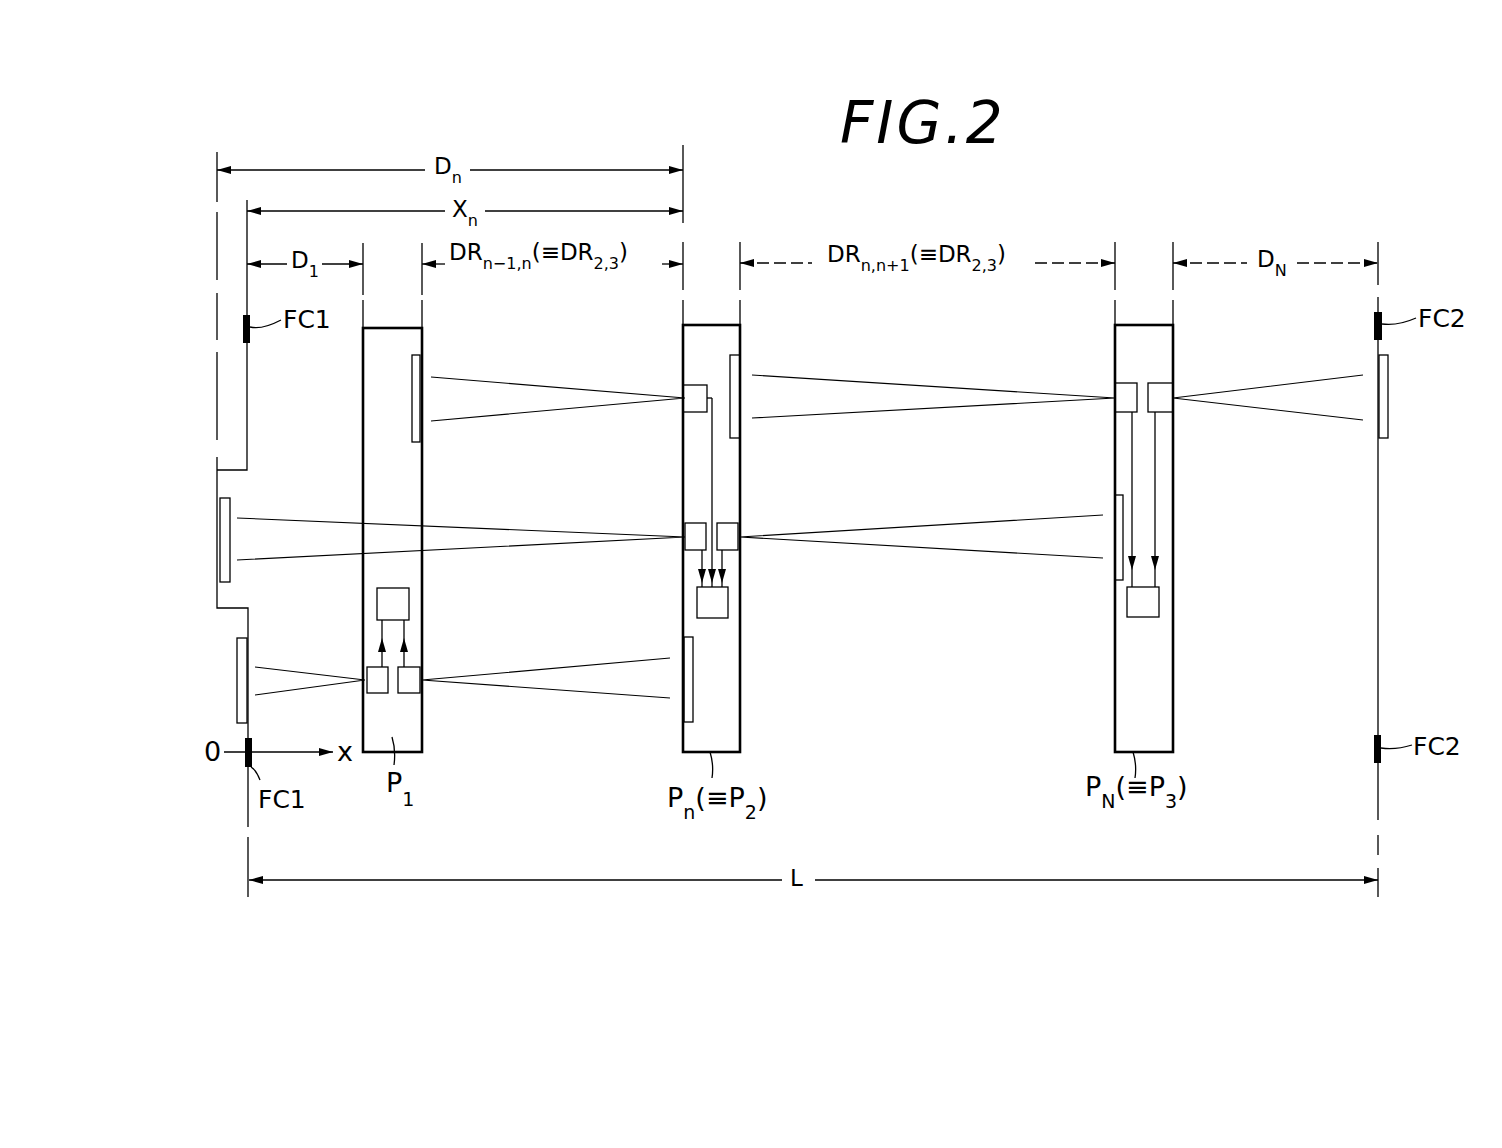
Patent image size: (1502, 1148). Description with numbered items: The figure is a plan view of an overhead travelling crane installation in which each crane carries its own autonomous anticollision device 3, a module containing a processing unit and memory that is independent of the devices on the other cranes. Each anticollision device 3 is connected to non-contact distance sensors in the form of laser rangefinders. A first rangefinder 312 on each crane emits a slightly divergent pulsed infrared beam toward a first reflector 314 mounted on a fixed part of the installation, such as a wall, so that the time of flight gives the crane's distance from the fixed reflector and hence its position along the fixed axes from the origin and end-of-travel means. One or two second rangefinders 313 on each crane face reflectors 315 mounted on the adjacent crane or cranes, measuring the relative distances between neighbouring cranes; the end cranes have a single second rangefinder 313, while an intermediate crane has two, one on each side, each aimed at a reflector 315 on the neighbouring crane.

The anticollision device 3 is at (402, 603).
The first rangefinder 312 is at (370, 683).
The second rangefinder 313 is at (418, 688).
The first reflector 314 is at (221, 530).
The reflector 315 is at (422, 367).